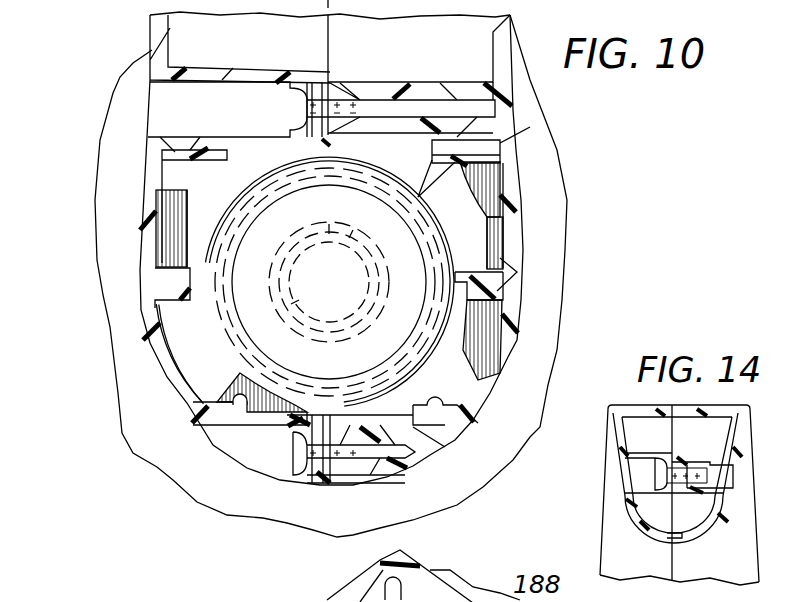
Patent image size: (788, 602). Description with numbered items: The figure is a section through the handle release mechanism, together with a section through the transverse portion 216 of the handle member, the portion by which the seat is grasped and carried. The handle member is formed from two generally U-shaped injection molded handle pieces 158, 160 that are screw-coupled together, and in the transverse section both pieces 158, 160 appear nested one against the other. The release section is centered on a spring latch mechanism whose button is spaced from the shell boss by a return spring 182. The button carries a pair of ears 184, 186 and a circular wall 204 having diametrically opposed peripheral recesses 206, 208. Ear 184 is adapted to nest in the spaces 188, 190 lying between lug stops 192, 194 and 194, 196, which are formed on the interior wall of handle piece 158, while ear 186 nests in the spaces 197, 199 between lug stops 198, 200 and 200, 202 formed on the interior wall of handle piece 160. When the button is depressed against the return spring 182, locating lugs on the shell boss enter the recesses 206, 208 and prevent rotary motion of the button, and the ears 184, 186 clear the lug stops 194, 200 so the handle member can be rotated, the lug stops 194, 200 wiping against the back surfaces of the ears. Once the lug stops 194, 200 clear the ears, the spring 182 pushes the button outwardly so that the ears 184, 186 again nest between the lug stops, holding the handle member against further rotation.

In FIG. 10, the handle piece 158 is at (515, 348).
In FIG. 14, the handle piece 158 is at (630, 512).
In FIG. 10, the handle piece 160 is at (137, 320).
In FIG. 14, the handle piece 160 is at (723, 522).
In FIG. 10, the return spring 182 is at (370, 283).
In FIG. 10, the ear 184 is at (475, 243).
In FIG. 10, the ear 186 is at (193, 368).
In FIG. 10, the space 188 is at (487, 183).
In FIG. 10, the space 190 is at (460, 360).
In FIG. 10, the lug stop 192 is at (500, 146).
In FIG. 10, the lug stop 194 is at (497, 292).
In FIG. 10, the lug stop 196 is at (450, 405).
In FIG. 10, the space 197 is at (160, 373).
In FIG. 10, the lug stop 198 is at (250, 412).
In FIG. 10, the space 199 is at (175, 212).
In FIG. 10, the lug stop 200 is at (165, 283).
In FIG. 10, the lug stop 202 is at (180, 163).
In FIG. 10, the circular wall 204 is at (231, 221).
In FIG. 10, the peripheral recess 206 is at (408, 190).
In FIG. 10, the peripheral recess 208 is at (270, 432).
In FIG. 14, the transverse portion 216 is at (609, 496).